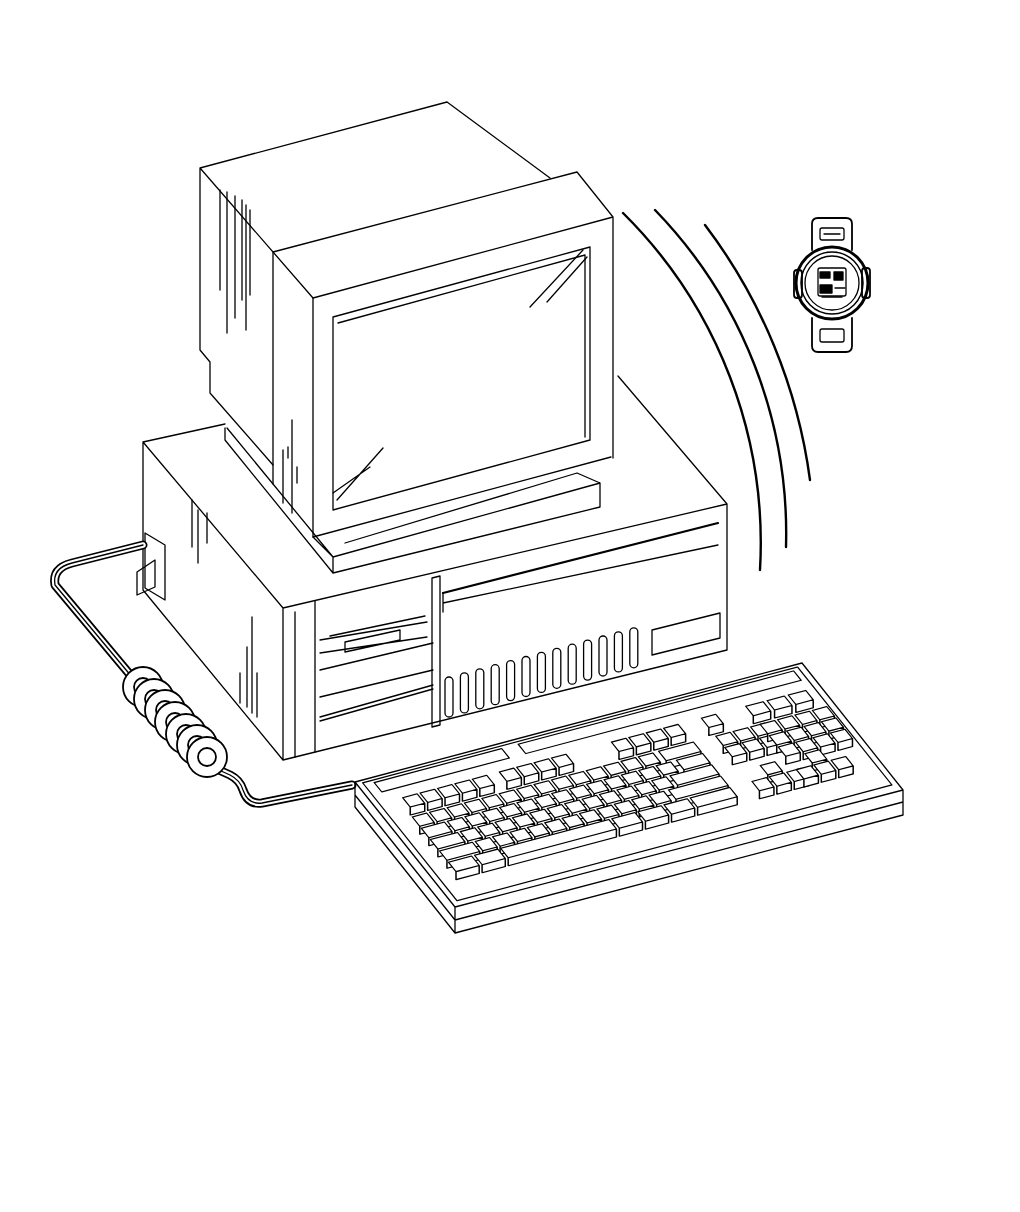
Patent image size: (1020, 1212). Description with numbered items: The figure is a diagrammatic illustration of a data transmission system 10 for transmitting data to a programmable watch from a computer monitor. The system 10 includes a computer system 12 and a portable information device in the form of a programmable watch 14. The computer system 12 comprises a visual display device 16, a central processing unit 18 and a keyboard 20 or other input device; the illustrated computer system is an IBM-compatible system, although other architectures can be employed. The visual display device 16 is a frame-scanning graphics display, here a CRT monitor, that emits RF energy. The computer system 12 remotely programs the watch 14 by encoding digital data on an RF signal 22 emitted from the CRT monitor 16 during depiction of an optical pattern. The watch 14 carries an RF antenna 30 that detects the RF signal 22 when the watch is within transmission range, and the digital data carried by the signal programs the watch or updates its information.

The data transmission system 10 is at (336, 88).
The computer system 12 is at (186, 826).
The programmable watch 14 is at (837, 204).
The visual display device 16 is at (580, 200).
The central processing unit 18 is at (708, 596).
The keyboard 20 is at (830, 700).
The RF signal 22 is at (812, 465).
The RF antenna 30 is at (851, 259).